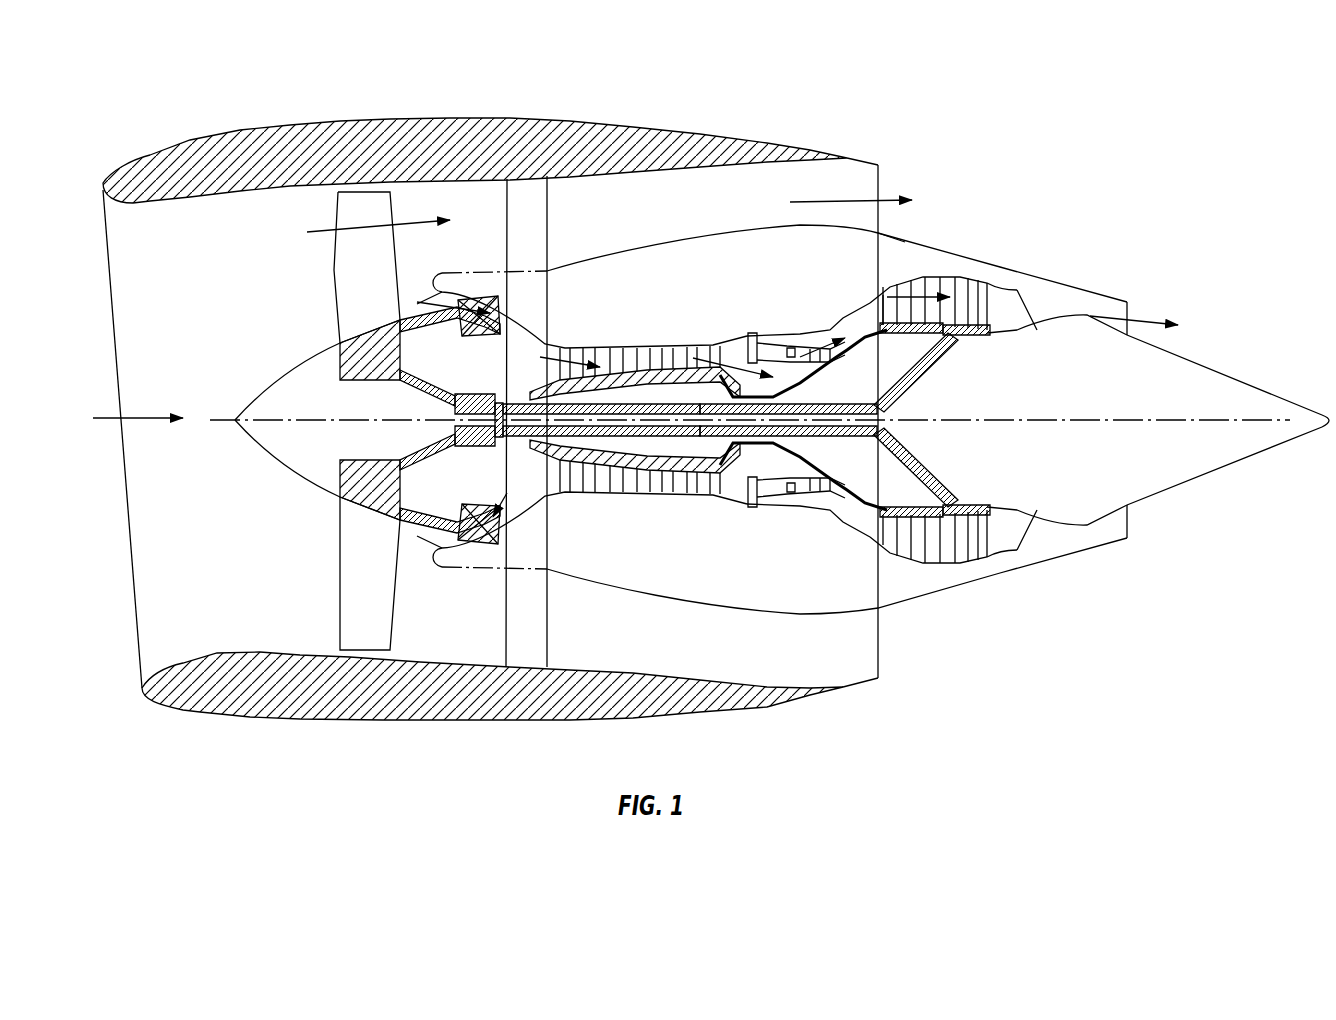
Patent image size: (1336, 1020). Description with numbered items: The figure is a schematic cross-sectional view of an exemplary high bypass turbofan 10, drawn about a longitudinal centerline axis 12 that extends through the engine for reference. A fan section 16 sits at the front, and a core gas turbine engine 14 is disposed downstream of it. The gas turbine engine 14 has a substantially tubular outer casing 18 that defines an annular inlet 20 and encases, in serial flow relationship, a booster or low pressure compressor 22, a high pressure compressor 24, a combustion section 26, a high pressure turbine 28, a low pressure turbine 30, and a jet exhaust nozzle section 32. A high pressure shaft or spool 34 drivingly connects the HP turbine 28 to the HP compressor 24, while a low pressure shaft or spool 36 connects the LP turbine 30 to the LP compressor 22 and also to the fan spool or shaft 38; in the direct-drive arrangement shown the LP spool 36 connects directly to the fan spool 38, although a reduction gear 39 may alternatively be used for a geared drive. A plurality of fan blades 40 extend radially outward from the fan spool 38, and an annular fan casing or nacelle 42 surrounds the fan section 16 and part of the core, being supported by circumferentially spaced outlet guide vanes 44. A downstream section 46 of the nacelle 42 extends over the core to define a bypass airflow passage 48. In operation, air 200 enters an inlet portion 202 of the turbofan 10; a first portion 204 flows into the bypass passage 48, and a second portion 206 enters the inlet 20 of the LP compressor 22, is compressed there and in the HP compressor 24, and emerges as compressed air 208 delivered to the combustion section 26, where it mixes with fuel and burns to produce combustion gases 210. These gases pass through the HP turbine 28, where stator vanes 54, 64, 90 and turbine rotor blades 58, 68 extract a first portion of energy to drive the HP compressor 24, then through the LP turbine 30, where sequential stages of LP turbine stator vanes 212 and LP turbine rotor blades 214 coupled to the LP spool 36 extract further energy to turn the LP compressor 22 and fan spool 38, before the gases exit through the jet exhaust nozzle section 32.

The turbofan 10 is at (1015, 150).
The longitudinal or axial centerline axis 12 is at (1070, 417).
The gas turbine engine 14 is at (733, 300).
The fan section 16 is at (385, 100).
The outer casing 18 is at (727, 603).
The annular inlet 20 is at (443, 540).
The low pressure compressor 22 is at (503, 505).
The high pressure compressor 24 is at (580, 497).
The combustion section 26 is at (770, 495).
The high pressure turbine 28 is at (823, 497).
The low pressure turbine 30 is at (977, 570).
The jet exhaust nozzle section 32 is at (1130, 310).
The high pressure shaft or spool 34 is at (820, 378).
The low pressure shaft or spool 36 is at (510, 400).
The fan spool or shaft 38 is at (395, 385).
The reduction gear 39 is at (497, 438).
The fan blades 40 is at (337, 590).
The nacelle 42 is at (383, 720).
The outlet guide vanes 44 is at (550, 237).
The downstream section of the nacelle 46 is at (712, 125).
The bypass airflow passage 48 is at (694, 216).
The stator vane 54 is at (790, 503).
The turbine rotor blade 58 is at (803, 505).
The stator vane 64 is at (817, 505).
The turbine rotor blade 68 is at (830, 508).
The stator vane 90 is at (833, 510).
The air 200 is at (147, 416).
The inlet portion 202 is at (140, 663).
The first portion of the air 204 is at (357, 225).
The second portion of the air 206 is at (430, 300).
The compressed air 208 is at (740, 350).
The combustion gases 210 is at (813, 343).
The LP turbine stator vanes 212 is at (887, 305).
The LP turbine rotor blades 214 is at (900, 240).